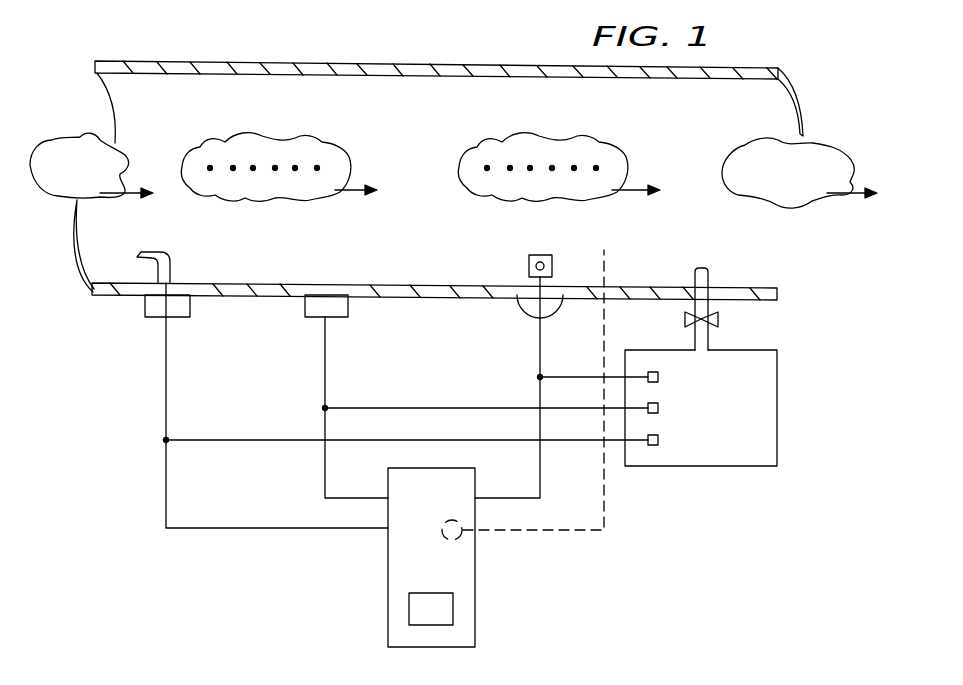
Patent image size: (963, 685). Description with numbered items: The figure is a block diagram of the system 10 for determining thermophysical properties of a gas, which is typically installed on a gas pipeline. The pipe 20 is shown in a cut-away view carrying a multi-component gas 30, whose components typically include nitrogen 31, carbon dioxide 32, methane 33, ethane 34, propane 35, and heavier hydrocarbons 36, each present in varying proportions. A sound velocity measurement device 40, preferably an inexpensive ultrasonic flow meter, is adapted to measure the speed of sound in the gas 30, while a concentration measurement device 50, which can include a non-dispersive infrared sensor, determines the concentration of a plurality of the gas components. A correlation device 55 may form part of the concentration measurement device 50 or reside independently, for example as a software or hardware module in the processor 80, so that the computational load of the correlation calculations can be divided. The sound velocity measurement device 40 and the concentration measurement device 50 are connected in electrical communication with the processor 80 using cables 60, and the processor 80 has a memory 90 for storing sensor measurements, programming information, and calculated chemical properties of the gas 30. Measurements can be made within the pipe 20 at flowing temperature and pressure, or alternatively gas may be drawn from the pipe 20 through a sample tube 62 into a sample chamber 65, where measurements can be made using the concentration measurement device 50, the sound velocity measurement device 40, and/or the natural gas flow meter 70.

The system 10 is at (698, 510).
The pipe 20 is at (138, 61).
The multi-component gas 30 is at (60, 140).
The nitrogen 31 is at (210, 168).
The carbon dioxide 32 is at (233, 168).
The methane 33 is at (253, 168).
The ethane 34 is at (275, 168).
The propane 35 is at (295, 168).
The heavier hydrocarbons 36 is at (317, 168).
The sound velocity measurement device 40 is at (305, 313).
The concentration measurement device 50 is at (528, 264).
The correlation device 55 is at (552, 262).
The cables 60 is at (165, 380).
The sample tube 62 is at (708, 340).
The sample chamber 65 is at (778, 412).
The natural gas flow meter 70 is at (175, 268).
The processor 80 is at (388, 592).
The memory 90 is at (430, 593).